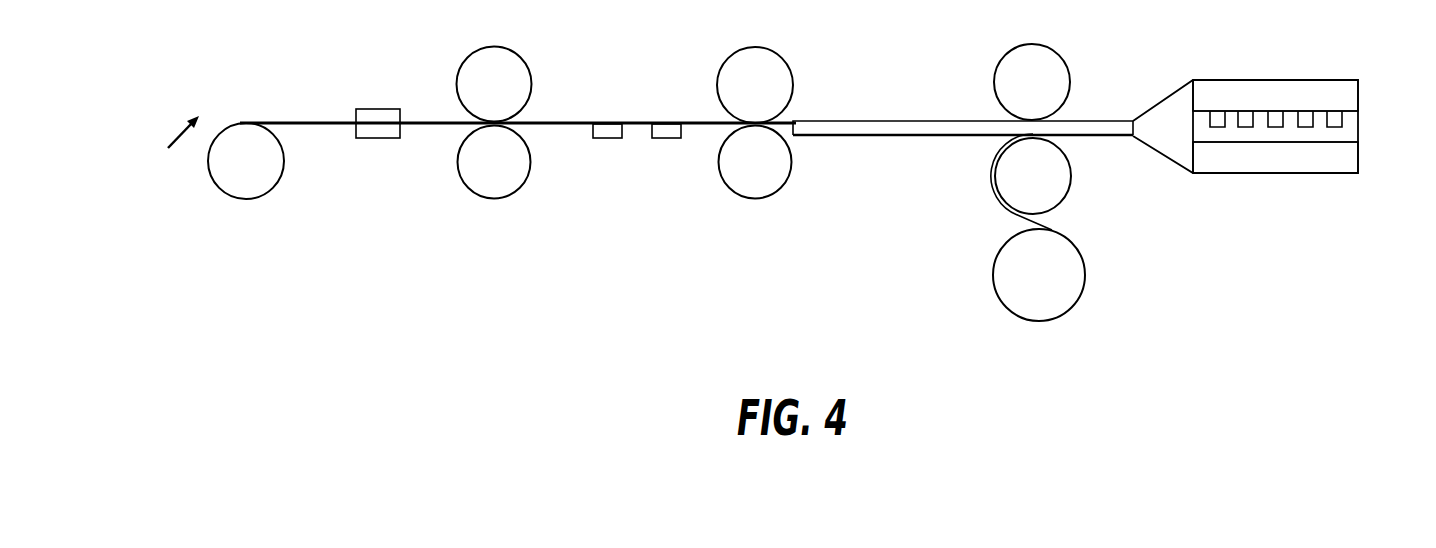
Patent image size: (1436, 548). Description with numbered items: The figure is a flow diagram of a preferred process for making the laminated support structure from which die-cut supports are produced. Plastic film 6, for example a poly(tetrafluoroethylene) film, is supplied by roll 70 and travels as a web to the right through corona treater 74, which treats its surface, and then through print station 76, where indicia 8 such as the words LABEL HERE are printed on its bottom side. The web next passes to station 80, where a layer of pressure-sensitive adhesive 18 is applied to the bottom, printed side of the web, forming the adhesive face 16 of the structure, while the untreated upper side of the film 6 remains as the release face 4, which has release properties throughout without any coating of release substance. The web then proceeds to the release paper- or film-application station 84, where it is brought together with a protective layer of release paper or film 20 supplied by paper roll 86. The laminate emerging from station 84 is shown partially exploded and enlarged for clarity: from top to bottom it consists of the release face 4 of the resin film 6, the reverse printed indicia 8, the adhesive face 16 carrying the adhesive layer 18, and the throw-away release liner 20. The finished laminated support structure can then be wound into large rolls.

The release face 4 is at (1303, 80).
The resin film 6 is at (313, 122).
The reverse printed indicia 8 is at (666, 138).
The adhesive face 16 is at (1358, 90).
The layer of adhesive 18 is at (913, 137).
The release liner 20 is at (1020, 218).
The roll 70 is at (221, 190).
The corona treater 74 is at (383, 138).
The print station 76 is at (512, 197).
The station 80 is at (772, 197).
The release paper- or film-application station 84 is at (1071, 182).
The paper roll 86 is at (1072, 303).